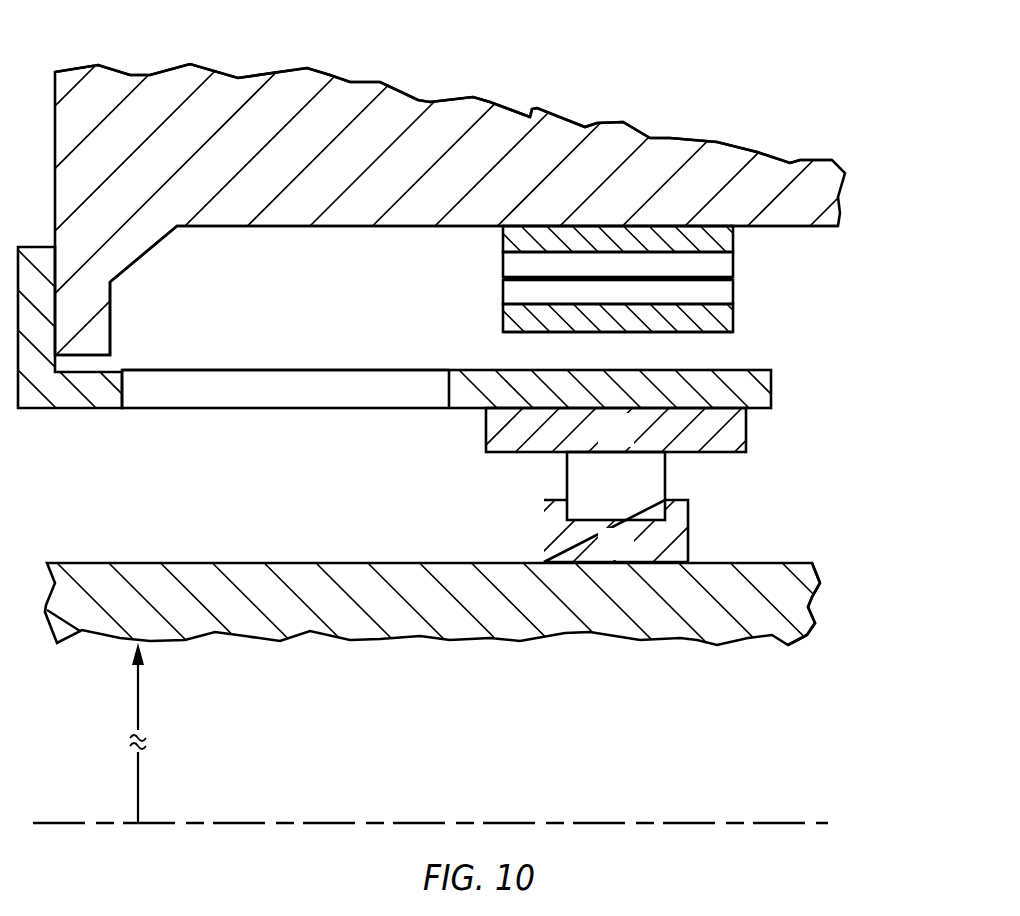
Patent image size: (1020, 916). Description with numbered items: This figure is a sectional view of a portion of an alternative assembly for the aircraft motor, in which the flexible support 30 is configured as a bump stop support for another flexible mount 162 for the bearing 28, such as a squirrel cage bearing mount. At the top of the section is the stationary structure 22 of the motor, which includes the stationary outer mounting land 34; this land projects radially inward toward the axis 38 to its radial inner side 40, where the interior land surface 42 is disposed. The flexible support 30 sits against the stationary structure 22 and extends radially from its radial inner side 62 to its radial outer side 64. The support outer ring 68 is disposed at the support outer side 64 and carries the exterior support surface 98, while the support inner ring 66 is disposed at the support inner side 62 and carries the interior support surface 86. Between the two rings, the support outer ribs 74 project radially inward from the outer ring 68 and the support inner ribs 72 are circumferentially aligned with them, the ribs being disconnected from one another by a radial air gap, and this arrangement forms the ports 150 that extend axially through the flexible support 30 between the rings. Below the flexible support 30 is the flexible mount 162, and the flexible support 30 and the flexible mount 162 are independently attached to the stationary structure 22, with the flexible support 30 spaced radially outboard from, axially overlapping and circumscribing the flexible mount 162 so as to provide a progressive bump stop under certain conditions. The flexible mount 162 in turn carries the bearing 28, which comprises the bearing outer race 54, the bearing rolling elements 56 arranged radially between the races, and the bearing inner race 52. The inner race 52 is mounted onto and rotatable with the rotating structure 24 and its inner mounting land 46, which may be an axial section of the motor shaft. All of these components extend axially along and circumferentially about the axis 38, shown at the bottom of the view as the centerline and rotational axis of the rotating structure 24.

The stationary structure 22 is at (637, 98).
The stationary outer mounting land 34 is at (585, 126).
The radial outer side of the flexible support 64 is at (670, 156).
The exterior support surface 98 is at (670, 223).
The radial inner side of the outer mounting land 40 is at (279, 298).
The interior land surface 42 is at (325, 228).
The flexible support 30 is at (642, 292).
The support outer ring 68 is at (736, 235).
The support outer ribs 74 is at (503, 262).
The ports 150 is at (700, 263).
The support inner ribs 72 is at (503, 292).
The support inner ring 66 is at (736, 318).
The radial inner side of the flexible support 62 is at (568, 343).
The interior support surface 86 is at (521, 333).
The flexible mount 162 is at (785, 393).
The bearing 28 is at (648, 485).
The bearing outer race 54 is at (603, 442).
The bearing rolling elements 56 is at (603, 500).
The bearing inner race 52 is at (603, 558).
The rotating structure 24 is at (833, 585).
The inner mounting land 46 is at (813, 607).
The axis 38 is at (808, 822).